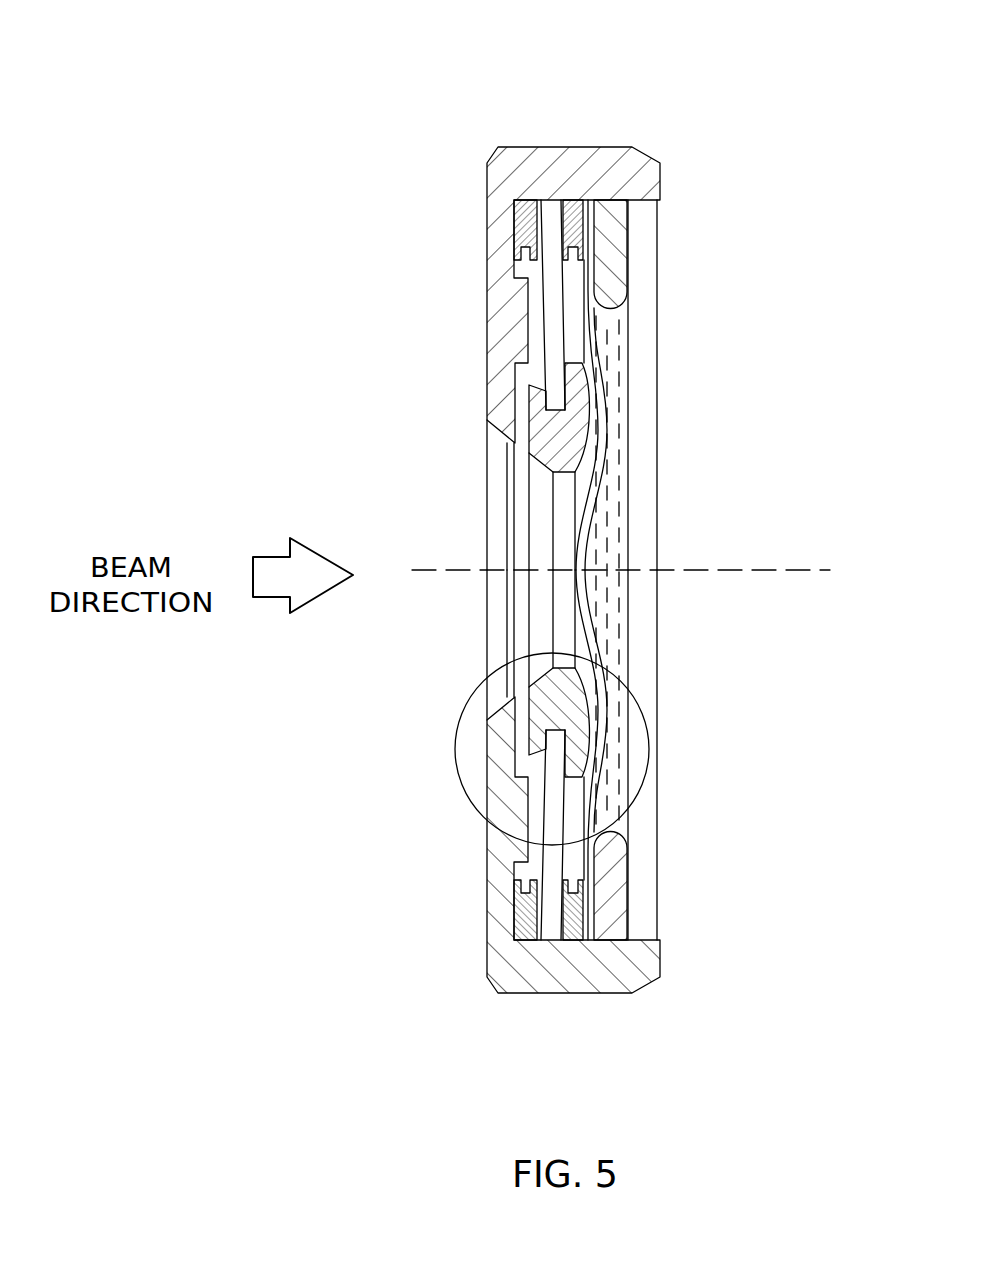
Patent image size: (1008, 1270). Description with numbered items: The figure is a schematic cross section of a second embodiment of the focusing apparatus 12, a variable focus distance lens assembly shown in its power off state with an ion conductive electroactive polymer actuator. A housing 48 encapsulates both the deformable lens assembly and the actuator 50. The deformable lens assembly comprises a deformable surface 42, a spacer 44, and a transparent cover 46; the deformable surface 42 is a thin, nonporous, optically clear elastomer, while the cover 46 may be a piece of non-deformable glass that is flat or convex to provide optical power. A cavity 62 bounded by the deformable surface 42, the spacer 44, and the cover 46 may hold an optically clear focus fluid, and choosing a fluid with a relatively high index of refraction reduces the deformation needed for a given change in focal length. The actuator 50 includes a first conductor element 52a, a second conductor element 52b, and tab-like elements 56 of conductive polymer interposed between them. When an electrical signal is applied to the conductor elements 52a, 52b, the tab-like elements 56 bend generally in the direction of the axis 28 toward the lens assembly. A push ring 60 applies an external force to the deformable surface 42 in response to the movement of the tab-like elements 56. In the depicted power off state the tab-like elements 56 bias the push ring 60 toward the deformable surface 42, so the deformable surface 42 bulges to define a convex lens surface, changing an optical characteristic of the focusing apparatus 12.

The focusing apparatus 12 is at (484, 88).
The axis 28 is at (475, 567).
The deformable surface 42 is at (572, 585).
The spacer 44 is at (611, 926).
The transparent cover 46 is at (662, 478).
The housing 48 is at (580, 147).
The actuator 50 is at (456, 766).
The first conductor element 52a is at (567, 258).
The second conductor element 52b is at (530, 248).
The tab-like elements 56 is at (542, 316).
The push ring 60 is at (582, 412).
The cavity 62 is at (623, 608).